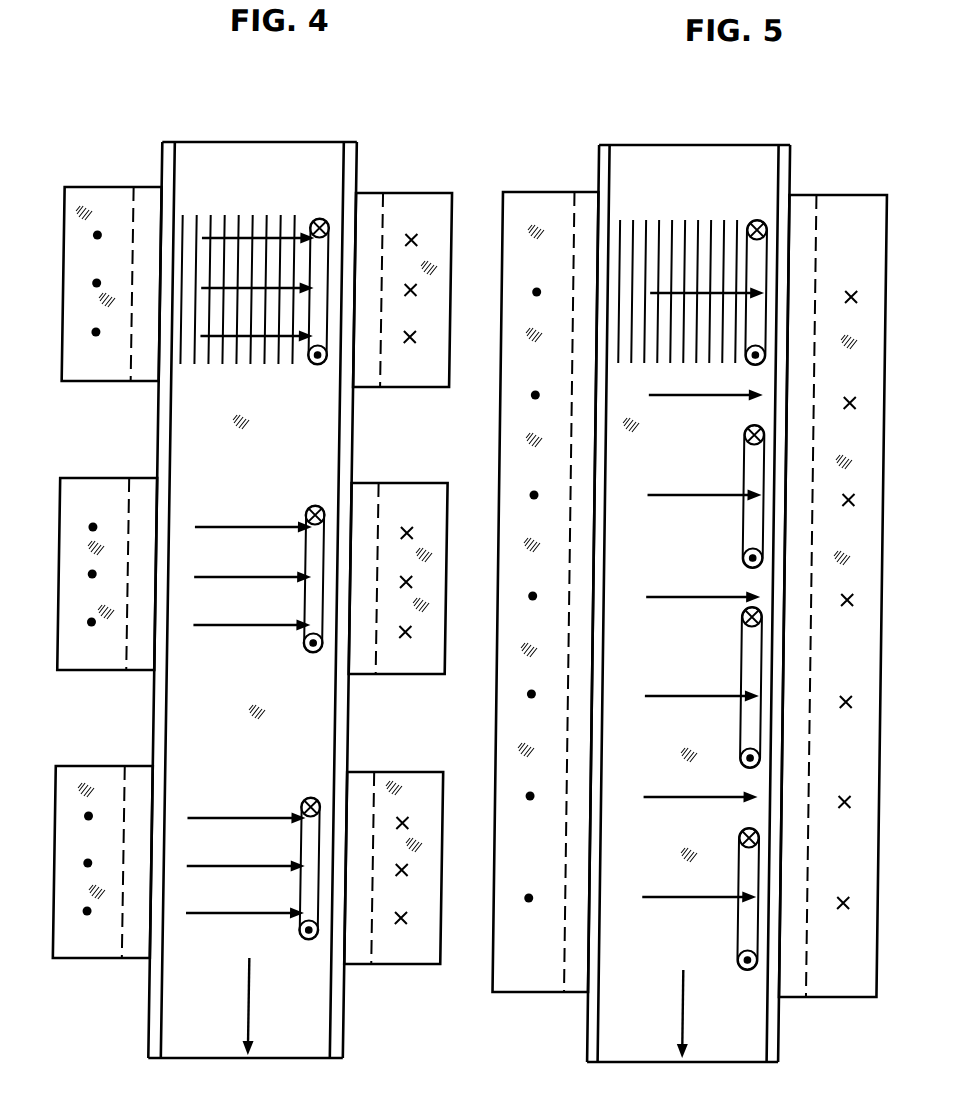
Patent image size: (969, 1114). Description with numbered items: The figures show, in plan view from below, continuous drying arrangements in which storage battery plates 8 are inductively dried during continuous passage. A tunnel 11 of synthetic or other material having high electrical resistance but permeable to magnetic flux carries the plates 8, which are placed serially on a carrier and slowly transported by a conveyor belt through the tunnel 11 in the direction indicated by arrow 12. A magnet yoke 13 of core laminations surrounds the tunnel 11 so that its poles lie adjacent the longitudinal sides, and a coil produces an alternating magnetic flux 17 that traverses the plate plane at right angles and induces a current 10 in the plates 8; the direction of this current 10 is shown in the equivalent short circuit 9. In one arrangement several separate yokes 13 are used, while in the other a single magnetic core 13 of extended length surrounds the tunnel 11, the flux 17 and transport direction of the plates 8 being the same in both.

In FIG. 4, the plates 8 is at (201, 222).
In FIG. 5, the plates 8 is at (635, 230).
In FIG. 4, the equivalent short circuit 9 is at (323, 220).
In FIG. 5, the equivalent short circuit 9 is at (753, 223).
In FIG. 4, the current 10 is at (325, 218).
In FIG. 5, the current 10 is at (763, 222).
In FIG. 4, the tunnel 11 is at (355, 168).
In FIG. 5, the tunnel 11 is at (790, 173).
In FIG. 4, the arrow 12 is at (268, 1000).
In FIG. 5, the arrow 12 is at (701, 1008).
In FIG. 4, the magnet yoke 13 is at (106, 195).
In FIG. 5, the magnet yoke 13 is at (848, 205).
In FIG. 4, the alternating magnetic flux 17 is at (99, 283).
In FIG. 5, the alternating magnetic flux 17 is at (541, 292).